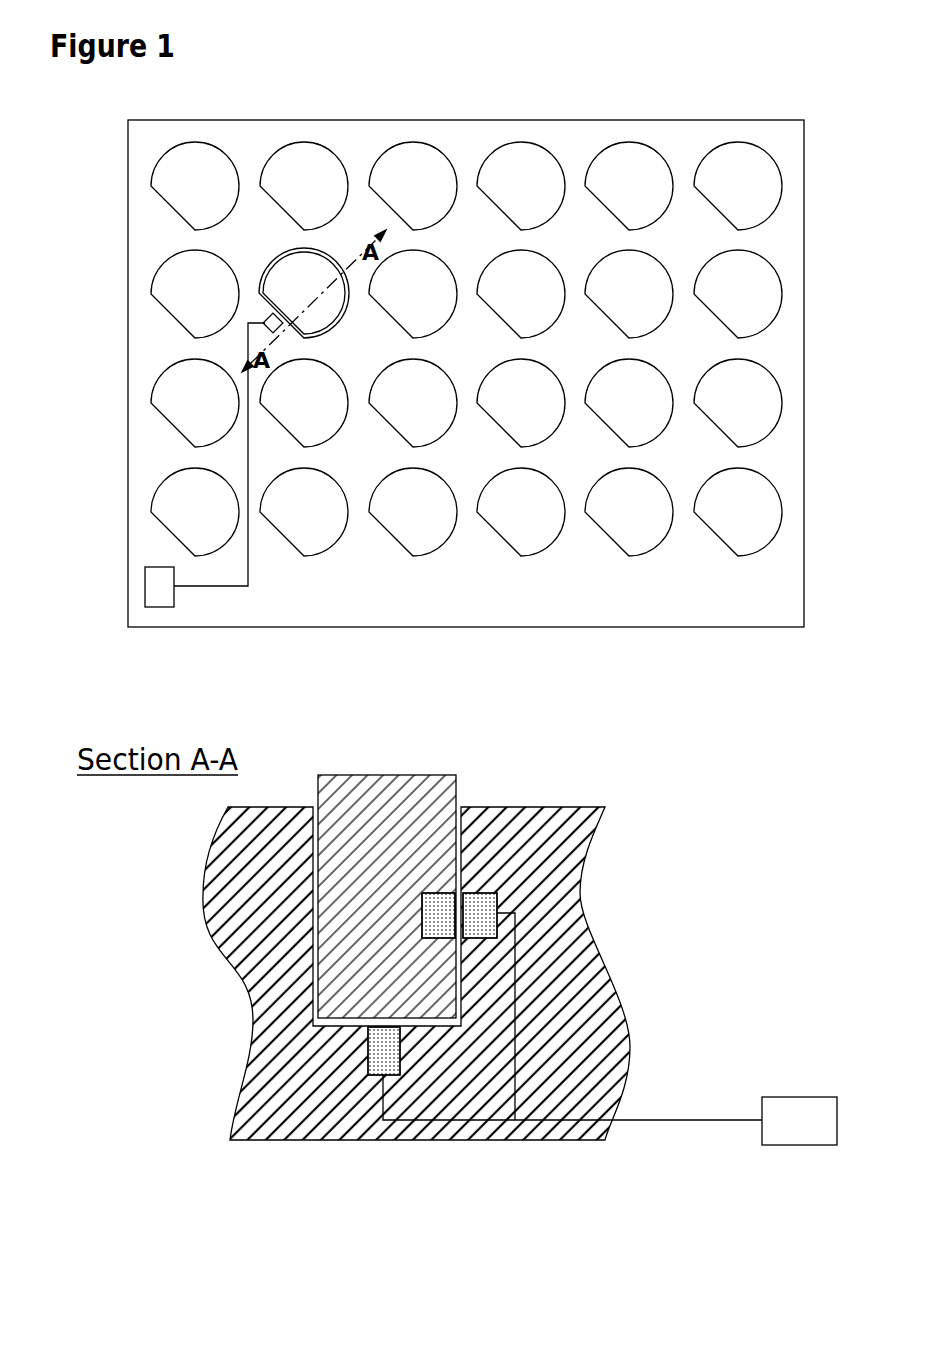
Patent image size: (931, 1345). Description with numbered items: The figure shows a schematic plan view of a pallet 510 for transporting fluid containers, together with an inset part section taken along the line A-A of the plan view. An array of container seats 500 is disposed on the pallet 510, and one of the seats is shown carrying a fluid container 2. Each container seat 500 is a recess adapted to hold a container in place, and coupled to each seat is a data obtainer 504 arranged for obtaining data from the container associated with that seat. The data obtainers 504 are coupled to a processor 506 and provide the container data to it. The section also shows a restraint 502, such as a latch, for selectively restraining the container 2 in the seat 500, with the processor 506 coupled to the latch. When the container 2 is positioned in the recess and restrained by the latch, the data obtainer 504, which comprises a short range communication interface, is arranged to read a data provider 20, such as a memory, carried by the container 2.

The fluid container 2 is at (347, 313).
The data provider 20 is at (426, 927).
The container seat 500 is at (457, 173).
The restraint 502 is at (377, 1057).
The data obtainer 504 is at (268, 318).
The processor 506 is at (145, 580).
The pallet 510 is at (695, 628).